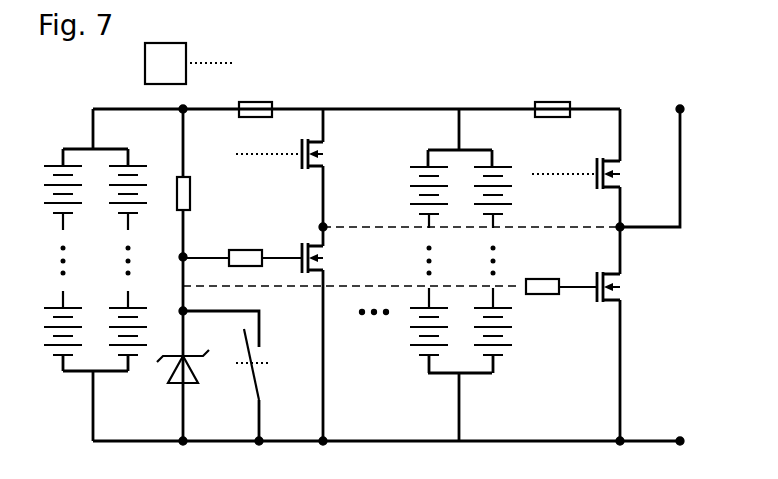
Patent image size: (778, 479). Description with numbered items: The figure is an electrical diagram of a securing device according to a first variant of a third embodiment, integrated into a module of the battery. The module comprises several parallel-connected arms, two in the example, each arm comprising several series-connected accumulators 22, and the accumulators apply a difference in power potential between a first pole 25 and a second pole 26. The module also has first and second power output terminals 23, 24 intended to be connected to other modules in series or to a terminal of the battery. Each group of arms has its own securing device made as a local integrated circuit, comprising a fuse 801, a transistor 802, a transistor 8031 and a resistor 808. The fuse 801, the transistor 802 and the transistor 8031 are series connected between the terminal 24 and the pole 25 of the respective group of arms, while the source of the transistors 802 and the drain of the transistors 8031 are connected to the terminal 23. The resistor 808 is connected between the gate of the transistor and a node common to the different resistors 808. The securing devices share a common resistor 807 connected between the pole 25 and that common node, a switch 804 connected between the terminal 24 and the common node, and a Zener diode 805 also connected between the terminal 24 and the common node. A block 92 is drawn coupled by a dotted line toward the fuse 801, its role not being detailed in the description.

The accumulator 22 is at (45, 165).
The first power output terminal 23 is at (683, 104).
The second power output terminal 24 is at (687, 443).
The first pole 25 is at (93, 147).
The second pole 26 is at (93, 372).
The control unit 92 is at (145, 63).
The fuse 801 is at (256, 101).
The transistor 802 is at (324, 158).
The transistor 8031 is at (324, 261).
The switch 804 is at (254, 375).
The Zener diode 805 is at (163, 358).
The common resistor 807 is at (177, 193).
The resistor 808 is at (245, 249).